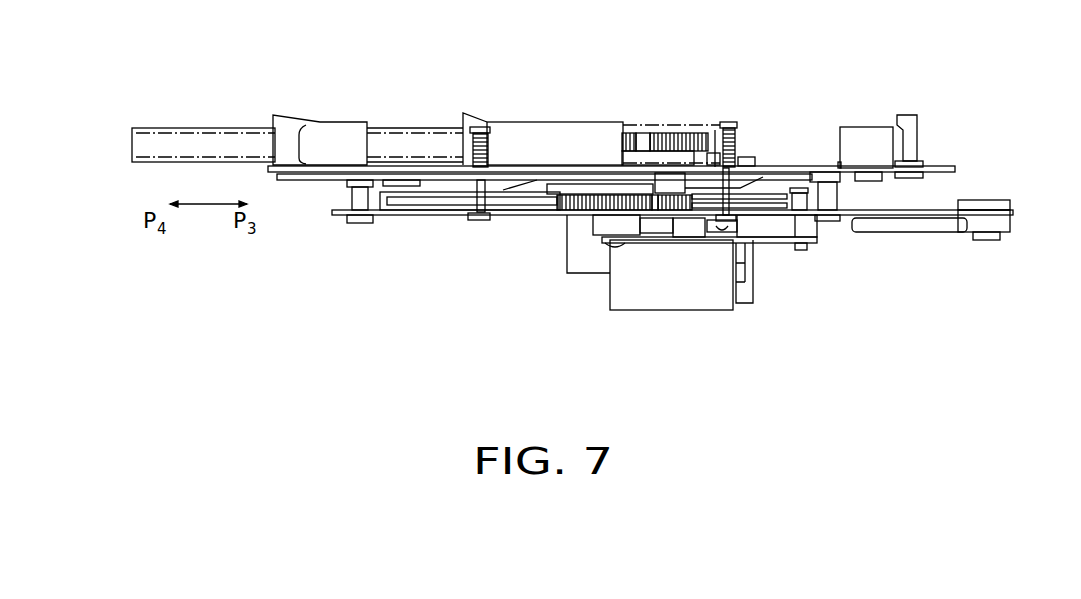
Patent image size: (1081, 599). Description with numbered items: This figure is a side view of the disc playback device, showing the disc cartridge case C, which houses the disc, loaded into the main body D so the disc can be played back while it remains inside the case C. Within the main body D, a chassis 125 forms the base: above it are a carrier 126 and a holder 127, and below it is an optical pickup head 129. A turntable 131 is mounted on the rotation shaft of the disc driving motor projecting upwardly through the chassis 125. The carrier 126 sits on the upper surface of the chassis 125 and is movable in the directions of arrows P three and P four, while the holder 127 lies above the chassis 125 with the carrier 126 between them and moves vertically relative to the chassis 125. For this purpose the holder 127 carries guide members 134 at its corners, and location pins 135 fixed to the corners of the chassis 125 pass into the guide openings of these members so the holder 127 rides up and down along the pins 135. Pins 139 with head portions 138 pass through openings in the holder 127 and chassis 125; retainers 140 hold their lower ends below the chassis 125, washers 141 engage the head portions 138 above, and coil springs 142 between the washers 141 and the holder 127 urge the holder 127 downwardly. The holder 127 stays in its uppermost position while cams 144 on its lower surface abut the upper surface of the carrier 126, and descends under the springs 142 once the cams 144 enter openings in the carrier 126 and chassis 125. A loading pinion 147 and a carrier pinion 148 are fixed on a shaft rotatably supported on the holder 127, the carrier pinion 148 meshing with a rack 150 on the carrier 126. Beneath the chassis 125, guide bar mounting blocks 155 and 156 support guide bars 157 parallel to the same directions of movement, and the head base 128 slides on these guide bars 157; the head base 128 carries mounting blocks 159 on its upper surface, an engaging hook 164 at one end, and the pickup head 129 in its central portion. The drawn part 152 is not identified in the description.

The disc cartridge case C is at (215, 128).
The main body D is at (794, 138).
The chassis 125 is at (423, 216).
The carrier 126 is at (455, 200).
The holder 127 is at (330, 165).
The head base 128 is at (754, 247).
The optical pickup head 129 is at (640, 314).
The turntable 131 is at (598, 188).
The guide member 134 is at (350, 182).
The location pin 135 is at (360, 198).
The head portion 138 is at (481, 126).
The pin 139 is at (474, 186).
The retainer 140 is at (482, 219).
The washer 141 is at (468, 137).
The coil spring 142 is at (472, 150).
The cam 144 is at (504, 186).
The loading pinion 147 is at (668, 143).
The carrier pinion 148 is at (662, 206).
The rack 150 is at (578, 212).
The guide member 152 is at (400, 184).
The guide bar mounting block 155 is at (1012, 222).
The guide bar mounting block 156 is at (590, 234).
The guide bar 157 is at (945, 226).
The mounting block 159 is at (688, 228).
The engaging hook 164 is at (810, 247).